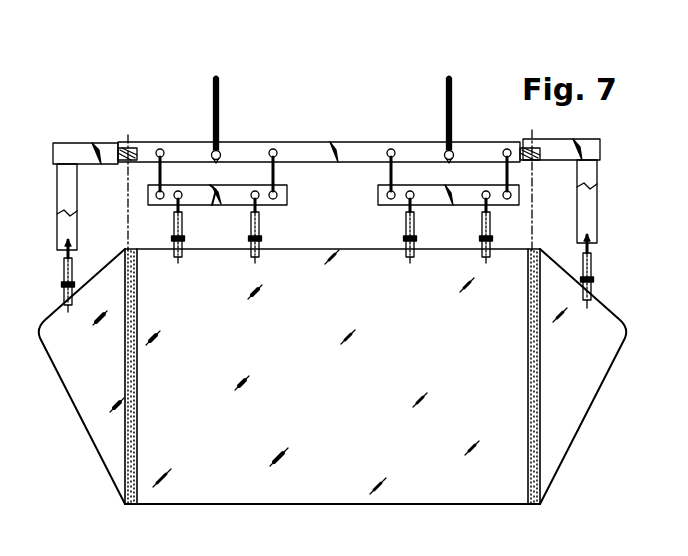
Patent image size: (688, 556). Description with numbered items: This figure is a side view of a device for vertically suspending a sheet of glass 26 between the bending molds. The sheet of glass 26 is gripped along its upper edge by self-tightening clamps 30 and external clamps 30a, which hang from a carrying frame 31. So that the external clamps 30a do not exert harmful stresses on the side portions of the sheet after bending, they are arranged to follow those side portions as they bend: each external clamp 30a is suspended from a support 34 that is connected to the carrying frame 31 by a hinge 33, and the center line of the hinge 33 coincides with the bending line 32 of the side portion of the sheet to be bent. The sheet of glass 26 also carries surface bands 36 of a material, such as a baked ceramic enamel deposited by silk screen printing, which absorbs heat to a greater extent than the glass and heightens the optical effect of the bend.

The sheet of glass 26 is at (332, 376).
The self-tightening clamps 30 is at (251, 226).
The external clamps 30a is at (64, 270).
The carrying frame 31 is at (330, 143).
The bending line 32 is at (128, 185).
The hinge 33 is at (133, 143).
The support 34 is at (79, 143).
The surface bands 36 is at (137, 420).